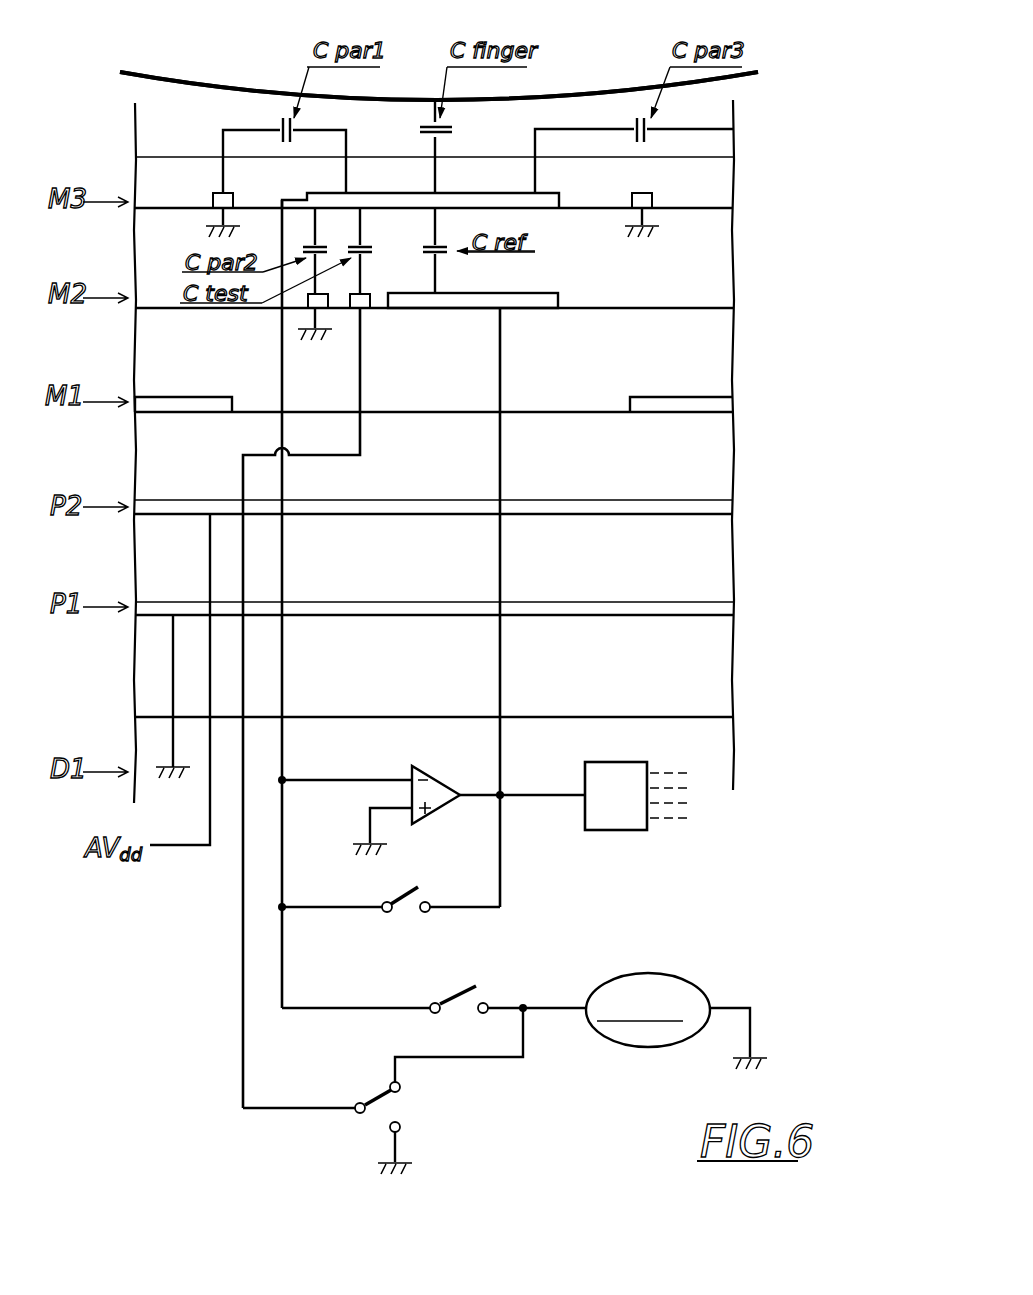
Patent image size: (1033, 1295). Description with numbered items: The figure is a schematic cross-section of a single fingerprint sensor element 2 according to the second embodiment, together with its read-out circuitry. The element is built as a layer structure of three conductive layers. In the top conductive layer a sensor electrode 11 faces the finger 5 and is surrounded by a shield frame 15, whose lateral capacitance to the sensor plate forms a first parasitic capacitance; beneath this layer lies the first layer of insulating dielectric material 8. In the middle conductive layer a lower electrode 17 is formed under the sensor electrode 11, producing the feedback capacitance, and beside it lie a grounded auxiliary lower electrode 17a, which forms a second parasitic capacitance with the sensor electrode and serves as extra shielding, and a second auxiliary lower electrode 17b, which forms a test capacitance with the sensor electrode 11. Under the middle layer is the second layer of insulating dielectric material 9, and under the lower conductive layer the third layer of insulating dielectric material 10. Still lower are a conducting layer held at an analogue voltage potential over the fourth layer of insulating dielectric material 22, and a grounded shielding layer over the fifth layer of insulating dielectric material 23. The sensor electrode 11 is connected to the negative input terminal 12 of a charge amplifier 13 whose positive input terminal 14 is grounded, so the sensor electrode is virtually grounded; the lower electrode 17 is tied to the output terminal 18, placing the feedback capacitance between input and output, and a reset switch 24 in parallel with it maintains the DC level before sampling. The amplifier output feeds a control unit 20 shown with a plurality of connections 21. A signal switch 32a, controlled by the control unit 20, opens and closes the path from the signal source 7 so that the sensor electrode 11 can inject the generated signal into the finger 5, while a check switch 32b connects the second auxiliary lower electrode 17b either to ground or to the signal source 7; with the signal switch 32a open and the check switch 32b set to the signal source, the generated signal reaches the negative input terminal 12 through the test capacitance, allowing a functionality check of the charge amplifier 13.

The fingerprint sensor element 2 is at (790, 172).
The finger 5 is at (727, 68).
The shield frame 15 is at (217, 193).
The sensor electrode 11 is at (490, 193).
The first layer of insulating dielectric material 8 is at (713, 266).
The lower electrode 17 is at (500, 298).
The second layer of insulating dielectric material 9 is at (705, 370).
The auxiliary lower electrode 17a is at (308, 308).
The second auxiliary lower electrode 17b is at (360, 309).
The third layer of insulating dielectric material 10 is at (703, 472).
The fourth layer of insulating dielectric material 22 is at (707, 575).
The fifth layer of insulating dielectric material 23 is at (707, 683).
The negative input terminal 12 is at (345, 781).
The positive input terminal 14 is at (377, 797).
The charge amplifier 13 is at (430, 790).
The output terminal 18 is at (472, 795).
The control unit 20 is at (627, 820).
The connections 21 is at (702, 808).
The reset switch 24 is at (392, 883).
The signal switch 32a is at (443, 985).
The check switch 32b is at (368, 1128).
The signal source 7 is at (645, 1058).